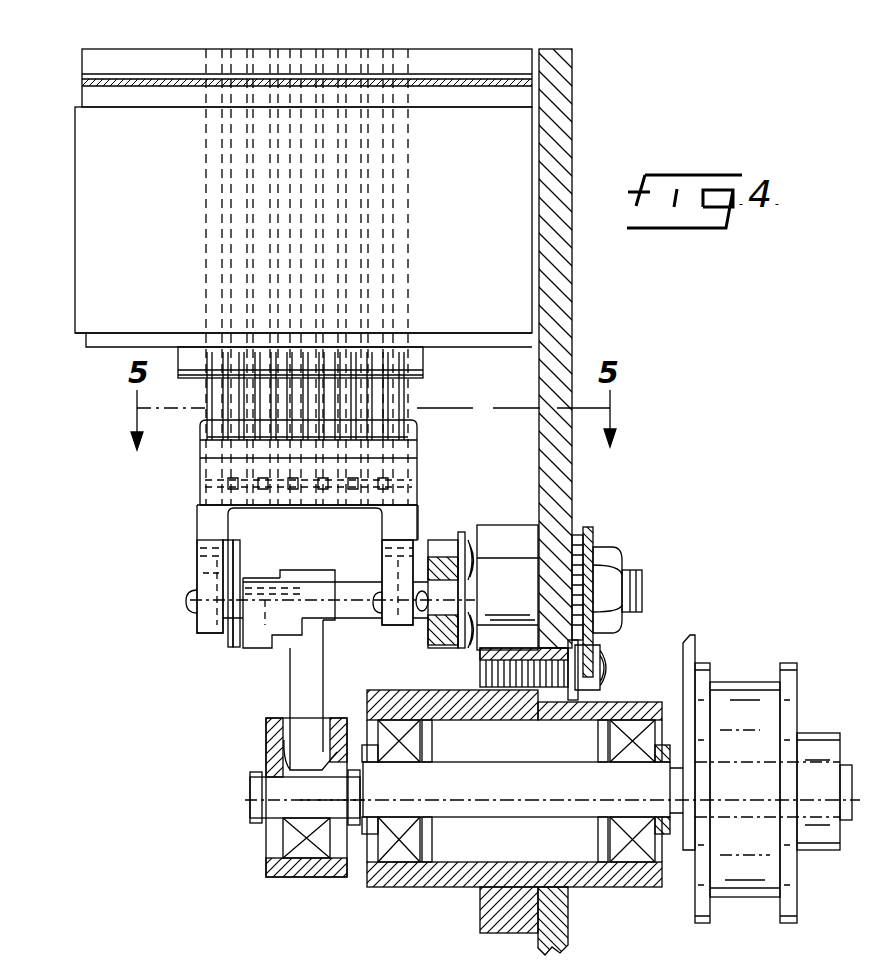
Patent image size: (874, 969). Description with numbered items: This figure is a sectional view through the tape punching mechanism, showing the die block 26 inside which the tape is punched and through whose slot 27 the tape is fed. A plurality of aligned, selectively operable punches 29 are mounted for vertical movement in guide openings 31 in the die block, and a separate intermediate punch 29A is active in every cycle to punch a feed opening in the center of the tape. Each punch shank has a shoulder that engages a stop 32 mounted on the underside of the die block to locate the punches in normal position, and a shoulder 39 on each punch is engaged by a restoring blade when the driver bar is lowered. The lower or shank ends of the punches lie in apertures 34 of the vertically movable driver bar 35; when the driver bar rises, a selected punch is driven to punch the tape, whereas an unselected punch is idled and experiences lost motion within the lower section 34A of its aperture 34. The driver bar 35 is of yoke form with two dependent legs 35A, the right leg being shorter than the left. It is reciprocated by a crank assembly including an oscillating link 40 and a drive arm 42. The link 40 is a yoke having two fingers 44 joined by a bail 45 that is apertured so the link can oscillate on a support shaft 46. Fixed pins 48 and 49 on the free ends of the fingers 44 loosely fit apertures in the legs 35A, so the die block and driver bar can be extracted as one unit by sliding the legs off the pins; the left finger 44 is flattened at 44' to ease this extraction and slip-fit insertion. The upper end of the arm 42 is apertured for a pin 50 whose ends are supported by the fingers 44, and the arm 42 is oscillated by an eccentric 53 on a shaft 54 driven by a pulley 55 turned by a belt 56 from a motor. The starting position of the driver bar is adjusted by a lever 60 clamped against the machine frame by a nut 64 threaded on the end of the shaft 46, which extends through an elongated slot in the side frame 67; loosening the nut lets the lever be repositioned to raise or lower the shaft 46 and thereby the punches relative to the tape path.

The die block 26 is at (85, 220).
The slot 27 is at (420, 78).
The punches 29 is at (207, 383).
The intermediate punch 29A is at (283, 437).
The guide openings 31 is at (408, 280).
The stop 32 is at (423, 370).
The apertures 34 is at (403, 467).
The lower section of aperture 34A is at (403, 487).
The driver bar 35 is at (202, 500).
The legs 35A is at (215, 635).
The shoulder 39 is at (418, 432).
The oscillating link 40 is at (426, 532).
The drive arm 42 is at (293, 703).
The fingers 44 is at (347, 616).
The flattened portion 44' is at (295, 565).
The bail 45 is at (313, 540).
The support shaft 46 is at (203, 573).
The pin 48 is at (187, 603).
The pin 49 is at (377, 613).
The pin 50 is at (372, 560).
The eccentric 53 is at (283, 803).
The shaft 54 is at (555, 802).
The pulley 55 is at (792, 923).
The belt 56 is at (750, 898).
The lever 60 is at (593, 533).
The nut 64 is at (623, 552).
The side frame 67 is at (568, 297).